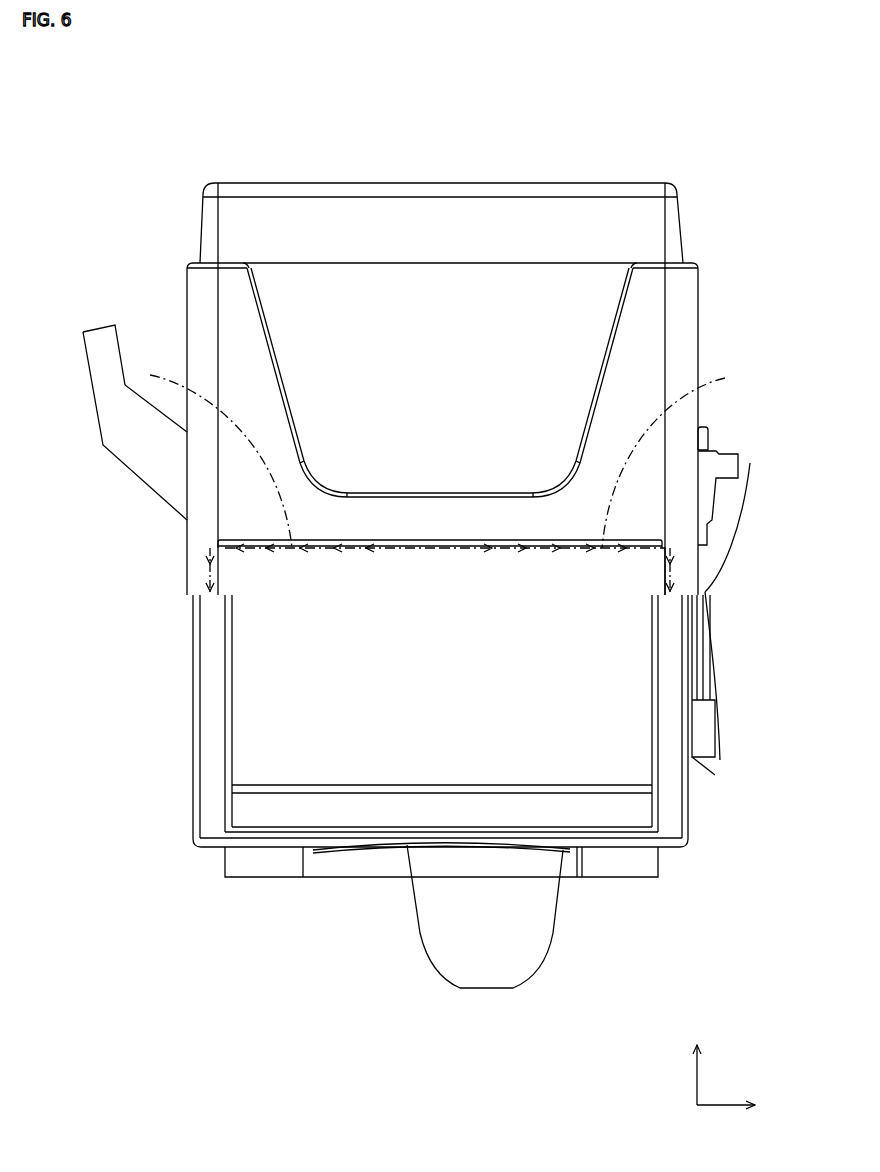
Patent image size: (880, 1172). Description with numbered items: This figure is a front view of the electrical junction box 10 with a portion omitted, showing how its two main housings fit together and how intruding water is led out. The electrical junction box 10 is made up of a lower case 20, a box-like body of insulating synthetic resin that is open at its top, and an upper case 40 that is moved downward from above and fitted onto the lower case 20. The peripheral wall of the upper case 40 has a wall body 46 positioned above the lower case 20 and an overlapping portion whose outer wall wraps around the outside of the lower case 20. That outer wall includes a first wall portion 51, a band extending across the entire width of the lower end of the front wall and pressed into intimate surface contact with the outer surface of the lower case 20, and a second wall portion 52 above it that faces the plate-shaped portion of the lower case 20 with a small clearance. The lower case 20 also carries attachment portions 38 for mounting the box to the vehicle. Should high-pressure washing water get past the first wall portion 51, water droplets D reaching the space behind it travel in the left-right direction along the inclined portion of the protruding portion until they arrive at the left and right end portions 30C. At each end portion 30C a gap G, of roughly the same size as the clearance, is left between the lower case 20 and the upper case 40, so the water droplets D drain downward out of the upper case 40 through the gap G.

The electrical junction box 10 is at (671, 148).
The upper case 40 is at (190, 180).
The wall body 46 is at (472, 305).
The second wall portion 52 is at (245, 385).
The lower case 20 is at (162, 730).
The first wall portion 51 is at (390, 585).
The attachment portion 38 is at (455, 973).
The end portion 30C is at (232, 592).
The gap G is at (666, 594).
The water droplets D is at (430, 477).